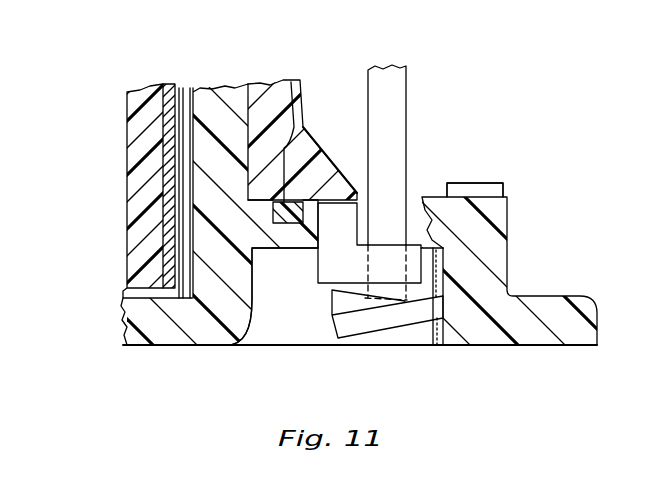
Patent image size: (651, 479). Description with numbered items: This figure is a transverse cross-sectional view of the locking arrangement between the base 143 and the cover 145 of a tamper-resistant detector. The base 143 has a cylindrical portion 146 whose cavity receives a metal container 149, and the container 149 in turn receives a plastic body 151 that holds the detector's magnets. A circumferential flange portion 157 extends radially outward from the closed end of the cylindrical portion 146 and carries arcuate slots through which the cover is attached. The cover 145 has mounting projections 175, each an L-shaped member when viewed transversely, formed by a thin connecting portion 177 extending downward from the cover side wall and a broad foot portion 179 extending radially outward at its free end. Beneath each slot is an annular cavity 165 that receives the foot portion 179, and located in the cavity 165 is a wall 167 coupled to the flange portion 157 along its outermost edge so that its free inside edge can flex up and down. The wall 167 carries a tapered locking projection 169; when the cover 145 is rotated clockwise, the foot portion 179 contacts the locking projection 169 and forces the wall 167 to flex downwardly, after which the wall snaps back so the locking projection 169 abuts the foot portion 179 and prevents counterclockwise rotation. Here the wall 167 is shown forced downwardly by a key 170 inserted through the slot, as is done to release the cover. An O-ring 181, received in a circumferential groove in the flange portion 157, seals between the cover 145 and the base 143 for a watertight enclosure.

The base 143 is at (212, 92).
The cover 145 is at (263, 92).
The cylindrical portion 146 is at (195, 263).
The metal container 149 is at (163, 188).
The plastic body 151 is at (137, 152).
The flange portion 157 is at (493, 257).
The cavity 165 is at (272, 310).
The wall 167 is at (423, 318).
The locking projection 169 is at (350, 305).
The key 170 is at (395, 103).
The mounting projection 175 is at (307, 290).
The connecting portion 177 is at (340, 213).
The foot portion 179 is at (417, 271).
The O-ring 181 is at (297, 115).